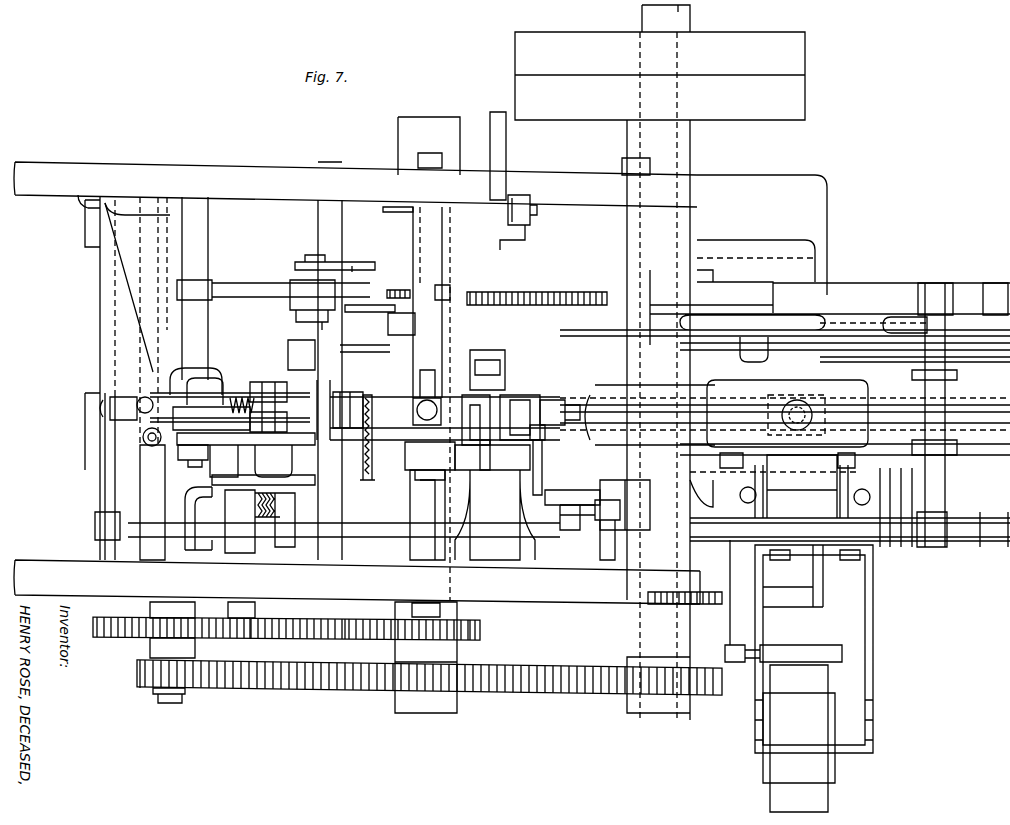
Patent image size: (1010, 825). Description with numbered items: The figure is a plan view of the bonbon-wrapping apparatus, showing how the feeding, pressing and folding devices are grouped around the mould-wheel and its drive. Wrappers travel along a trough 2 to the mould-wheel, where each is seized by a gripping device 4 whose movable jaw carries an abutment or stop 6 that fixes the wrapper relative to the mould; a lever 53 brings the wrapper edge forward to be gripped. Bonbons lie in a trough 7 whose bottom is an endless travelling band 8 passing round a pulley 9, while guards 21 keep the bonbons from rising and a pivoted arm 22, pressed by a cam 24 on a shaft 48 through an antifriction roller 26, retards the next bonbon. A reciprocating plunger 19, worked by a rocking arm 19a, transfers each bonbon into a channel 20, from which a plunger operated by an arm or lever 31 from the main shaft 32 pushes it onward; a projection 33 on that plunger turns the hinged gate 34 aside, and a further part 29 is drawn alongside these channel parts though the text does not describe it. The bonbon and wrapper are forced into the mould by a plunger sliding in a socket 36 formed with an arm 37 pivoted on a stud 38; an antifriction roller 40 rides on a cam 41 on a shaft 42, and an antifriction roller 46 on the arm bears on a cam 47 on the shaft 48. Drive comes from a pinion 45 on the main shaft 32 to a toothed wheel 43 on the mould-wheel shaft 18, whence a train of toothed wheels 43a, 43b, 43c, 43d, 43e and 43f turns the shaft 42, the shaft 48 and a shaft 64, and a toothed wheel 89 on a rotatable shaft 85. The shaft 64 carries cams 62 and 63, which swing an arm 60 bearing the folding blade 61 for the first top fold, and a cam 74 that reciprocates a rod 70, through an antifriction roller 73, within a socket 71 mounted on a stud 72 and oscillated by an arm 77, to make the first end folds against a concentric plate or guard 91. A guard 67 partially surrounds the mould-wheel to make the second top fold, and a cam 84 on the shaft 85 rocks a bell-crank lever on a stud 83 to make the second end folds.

The trough 2 is at (568, 408).
The gripping device 4 is at (542, 398).
The abutment or stop 6 is at (530, 432).
The trough 7 is at (782, 345).
The endless travelling band 8 is at (845, 344).
The pulley 9 is at (401, 324).
The mould wheel shaft 18 is at (427, 128).
The reciprocating plunger 19 is at (517, 300).
The rocking arm 19a is at (531, 232).
The channel 20 is at (515, 358).
The guards 21 is at (692, 310).
The arm 22 is at (385, 352).
The cam 24 is at (350, 310).
The antifriction roller 26 is at (290, 305).
The clutch 29 is at (542, 398).
The arm or lever 31 is at (612, 502).
The main shaft 32 is at (680, 14).
The projection 33 is at (488, 436).
The hinged piece or gate 34 is at (470, 398).
The socket 36 is at (415, 398).
The arm 37 is at (380, 284).
The stud 38 is at (442, 230).
The antifriction roller 40 is at (410, 452).
The cam 41 is at (468, 455).
The shaft 42 is at (410, 495).
The toothed wheel 43 is at (545, 670).
The toothed wheel 43a is at (150, 692).
The toothed wheel 43b is at (140, 668).
The toothed wheel 43c is at (185, 630).
The toothed wheel 43d is at (255, 634).
The toothed wheel 43e is at (345, 634).
The toothed wheel 43f is at (470, 624).
The pinion 45 is at (702, 700).
The antifriction roller 46 is at (310, 262).
The cam 47 is at (352, 266).
The shaft 48 is at (342, 222).
The lever 53 is at (590, 392).
The arm 60 is at (345, 480).
The folding blade 61 is at (375, 400).
The cam 62 is at (263, 537).
The cam 63 is at (214, 482).
The shaft 64 is at (242, 466).
The guard 67 is at (230, 407).
The rod 70 is at (140, 395).
The socket 71 is at (200, 374).
The stud 72 is at (195, 248).
The antifriction roller 73 is at (182, 448).
The cam 74 is at (285, 445).
The arm 77 is at (240, 288).
The stud 83 is at (105, 495).
The cam 84 is at (178, 525).
The rotatable shaft 85 is at (148, 488).
The toothed wheel 89 is at (128, 631).
The concentric plate or guard 91 is at (270, 378).